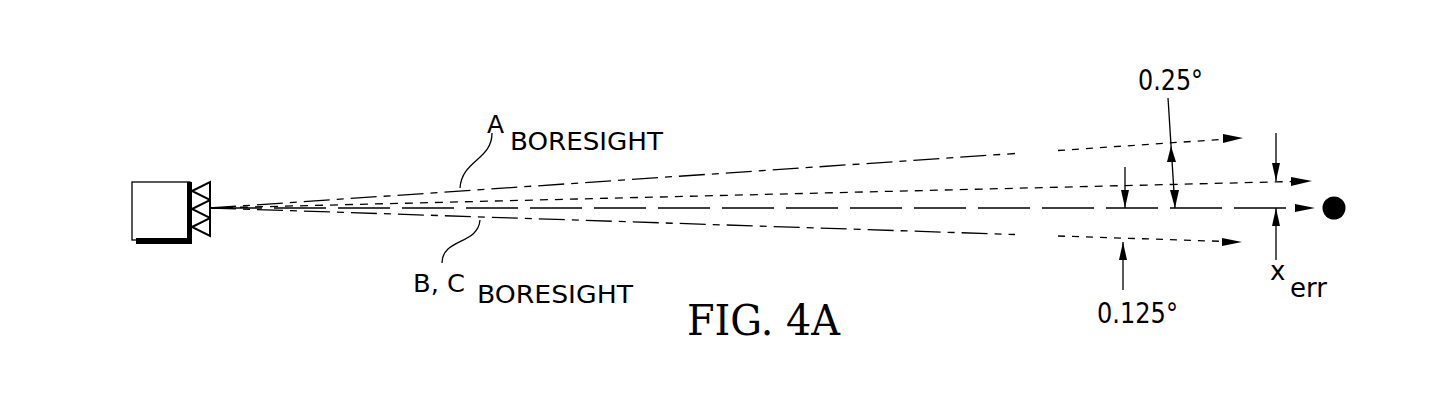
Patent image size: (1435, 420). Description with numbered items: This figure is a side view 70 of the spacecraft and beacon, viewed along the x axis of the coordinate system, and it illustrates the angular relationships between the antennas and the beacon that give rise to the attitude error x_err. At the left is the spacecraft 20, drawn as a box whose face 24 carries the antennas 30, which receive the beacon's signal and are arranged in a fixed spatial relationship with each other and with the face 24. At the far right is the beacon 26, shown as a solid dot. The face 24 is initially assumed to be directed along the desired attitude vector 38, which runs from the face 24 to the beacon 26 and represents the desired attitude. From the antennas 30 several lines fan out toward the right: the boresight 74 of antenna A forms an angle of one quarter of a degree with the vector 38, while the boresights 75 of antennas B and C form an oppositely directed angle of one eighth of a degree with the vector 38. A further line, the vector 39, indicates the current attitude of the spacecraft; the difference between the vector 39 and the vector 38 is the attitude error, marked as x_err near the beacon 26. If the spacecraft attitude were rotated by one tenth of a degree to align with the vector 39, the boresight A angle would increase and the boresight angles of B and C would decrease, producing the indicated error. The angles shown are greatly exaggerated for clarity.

The spacecraft 20 is at (192, 166).
The face 24 is at (197, 242).
The antennas 30 is at (210, 188).
The side view 70 is at (718, 125).
The boresight of antenna A 74 is at (726, 171).
The current attitude vector 39 is at (923, 190).
The desired attitude vector 38 is at (935, 208).
The boresights of antennas B and C 75 is at (726, 232).
The beacon 26 is at (1352, 178).